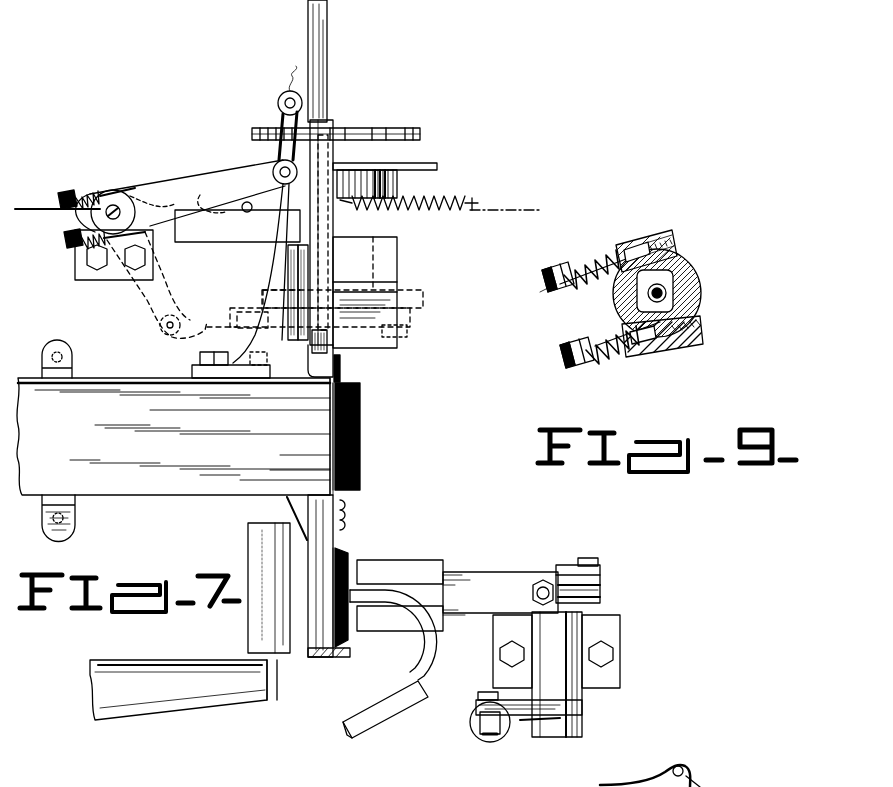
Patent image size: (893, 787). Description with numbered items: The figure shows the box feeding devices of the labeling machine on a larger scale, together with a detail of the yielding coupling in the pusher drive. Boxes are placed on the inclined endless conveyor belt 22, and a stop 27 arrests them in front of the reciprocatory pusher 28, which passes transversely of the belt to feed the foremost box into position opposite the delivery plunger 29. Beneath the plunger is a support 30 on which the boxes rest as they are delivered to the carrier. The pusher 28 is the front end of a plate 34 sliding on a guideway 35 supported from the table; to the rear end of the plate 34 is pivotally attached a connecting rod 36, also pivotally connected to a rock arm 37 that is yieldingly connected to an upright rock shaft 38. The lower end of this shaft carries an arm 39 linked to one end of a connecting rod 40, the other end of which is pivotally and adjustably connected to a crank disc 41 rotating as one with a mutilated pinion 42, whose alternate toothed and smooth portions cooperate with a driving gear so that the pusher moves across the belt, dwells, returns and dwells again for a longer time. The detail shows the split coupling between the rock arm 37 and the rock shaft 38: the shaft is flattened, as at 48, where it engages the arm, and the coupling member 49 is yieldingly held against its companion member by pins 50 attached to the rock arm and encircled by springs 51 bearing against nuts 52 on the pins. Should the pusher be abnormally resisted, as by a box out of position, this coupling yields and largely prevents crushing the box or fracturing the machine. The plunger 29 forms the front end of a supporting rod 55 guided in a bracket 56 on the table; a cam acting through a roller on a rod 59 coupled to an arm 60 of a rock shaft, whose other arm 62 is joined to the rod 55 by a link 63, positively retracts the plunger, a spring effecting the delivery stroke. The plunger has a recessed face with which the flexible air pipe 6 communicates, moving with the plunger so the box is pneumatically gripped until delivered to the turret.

In FIG. 7, the flexible air passageway or pipe 6 is at (390, 664).
In FIG. 7, the endless conveyor belt 22 is at (173, 436).
In FIG. 7, the stop 27 is at (337, 445).
In FIG. 7, the reciprocatory pusher 28 is at (340, 376).
In FIG. 7, the delivery plunger 29 is at (350, 552).
In FIG. 7, the support 30 is at (327, 638).
In FIG. 7, the plate 34 is at (300, 242).
In FIG. 7, the guideway 35 is at (316, 219).
In FIG. 7, the connecting rod 36 is at (282, 153).
In FIG. 7, the rock arm 37 is at (197, 187).
In FIG. 7, the rock shaft 38 is at (112, 203).
In FIG. 9, the rock shaft 38 is at (650, 290).
In FIG. 7, the arm 39 is at (155, 297).
In FIG. 7, the connecting rod 40 is at (403, 311).
In FIG. 7, the crank disc 41 is at (423, 300).
In FIG. 7, the mutilated pinion 42 is at (395, 190).
In FIG. 9, the flattened portion 48 is at (672, 291).
In FIG. 9, the coupling member 49 is at (632, 285).
In FIG. 9, the pins 50 is at (609, 258).
In FIG. 9, the springs 51 is at (579, 264).
In FIG. 9, the nuts 52 is at (548, 275).
In FIG. 7, the supporting rod 55 is at (475, 578).
In FIG. 7, the bracket 56 is at (398, 570).
In FIG. 7, the rod 59 is at (485, 734).
In FIG. 7, the arm 60 is at (550, 720).
In FIG. 7, the arm 62 is at (582, 590).
In FIG. 7, the link 63 is at (575, 580).